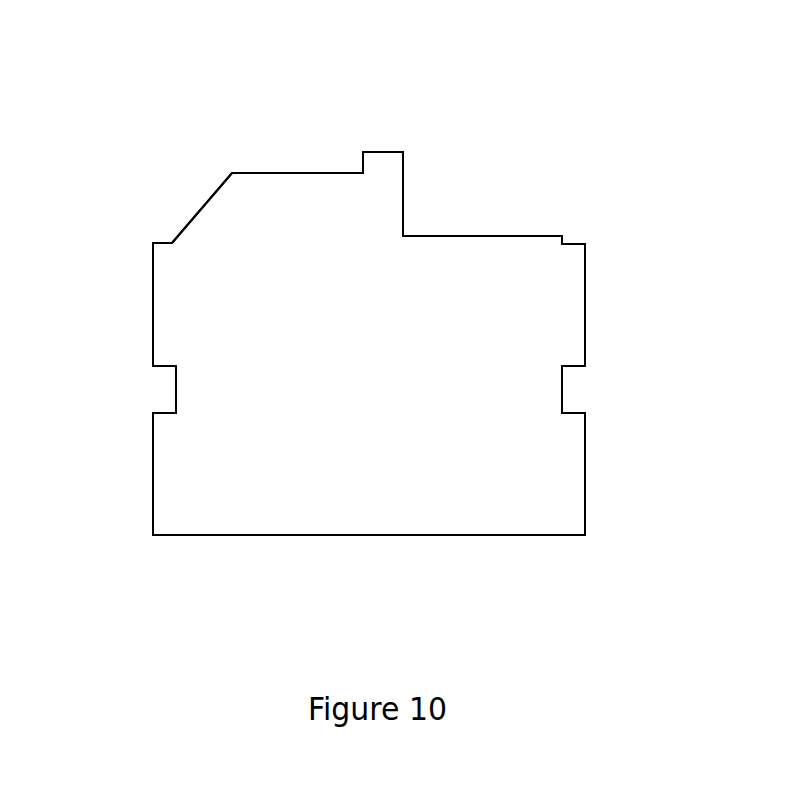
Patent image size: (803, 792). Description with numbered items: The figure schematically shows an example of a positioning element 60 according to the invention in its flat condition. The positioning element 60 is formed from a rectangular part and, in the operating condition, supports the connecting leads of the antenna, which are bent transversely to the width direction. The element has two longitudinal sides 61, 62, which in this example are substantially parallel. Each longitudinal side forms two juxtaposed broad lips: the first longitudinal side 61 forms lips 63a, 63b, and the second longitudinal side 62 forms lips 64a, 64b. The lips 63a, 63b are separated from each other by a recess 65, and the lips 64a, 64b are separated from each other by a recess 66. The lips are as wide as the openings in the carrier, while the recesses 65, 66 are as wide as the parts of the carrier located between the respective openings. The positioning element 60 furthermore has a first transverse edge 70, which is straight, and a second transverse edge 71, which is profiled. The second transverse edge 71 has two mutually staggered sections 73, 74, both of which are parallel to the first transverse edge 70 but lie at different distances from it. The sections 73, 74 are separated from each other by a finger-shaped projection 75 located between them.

The positioning element 60 is at (402, 390).
The first longitudinal side 61 is at (151, 471).
The second longitudinal side 62 is at (588, 472).
The first broad lip of first longitudinal side 63a is at (165, 308).
The second broad lip of first longitudinal side 63b is at (172, 502).
The first broad lip of second longitudinal side 64a is at (577, 318).
The second broad lip of second longitudinal side 64b is at (563, 503).
The first recess 65 is at (172, 393).
The second recess 66 is at (563, 392).
The first transverse edge 70 is at (360, 543).
The second transverse edge 71 is at (325, 172).
The first section of second transverse edge 73 is at (264, 168).
The second section of second transverse edge 74 is at (508, 230).
The finger-shaped projection 75 is at (384, 163).